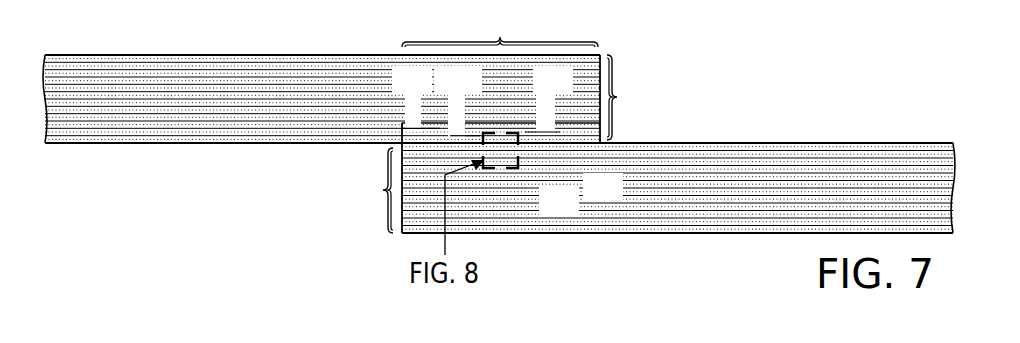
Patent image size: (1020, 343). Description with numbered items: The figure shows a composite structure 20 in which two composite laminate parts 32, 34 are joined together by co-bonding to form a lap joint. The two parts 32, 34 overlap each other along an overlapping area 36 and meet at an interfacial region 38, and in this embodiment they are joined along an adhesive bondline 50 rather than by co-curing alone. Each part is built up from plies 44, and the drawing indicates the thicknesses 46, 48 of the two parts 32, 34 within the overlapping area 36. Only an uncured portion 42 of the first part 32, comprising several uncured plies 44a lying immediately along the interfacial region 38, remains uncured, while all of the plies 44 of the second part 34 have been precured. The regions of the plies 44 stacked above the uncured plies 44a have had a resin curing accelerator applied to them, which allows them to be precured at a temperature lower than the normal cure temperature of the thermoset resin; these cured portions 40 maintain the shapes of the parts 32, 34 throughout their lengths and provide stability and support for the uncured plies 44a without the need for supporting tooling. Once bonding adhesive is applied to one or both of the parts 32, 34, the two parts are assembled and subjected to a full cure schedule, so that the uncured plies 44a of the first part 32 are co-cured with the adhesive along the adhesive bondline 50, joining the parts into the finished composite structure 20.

The composite structure 20 is at (499, 116).
The composite laminate part 32 is at (78, 65).
The composite laminate part 34 is at (923, 155).
The overlapping area 36 is at (500, 25).
The interfacial region 38 is at (548, 156).
The cured portions 40 is at (225, 100).
The uncured portion 42 is at (540, 132).
The plies 44 is at (423, 130).
The uncured plies 44a is at (465, 137).
The thickness 46 is at (633, 97).
The thickness 48 is at (368, 190).
The adhesive bondline 50 is at (588, 143).